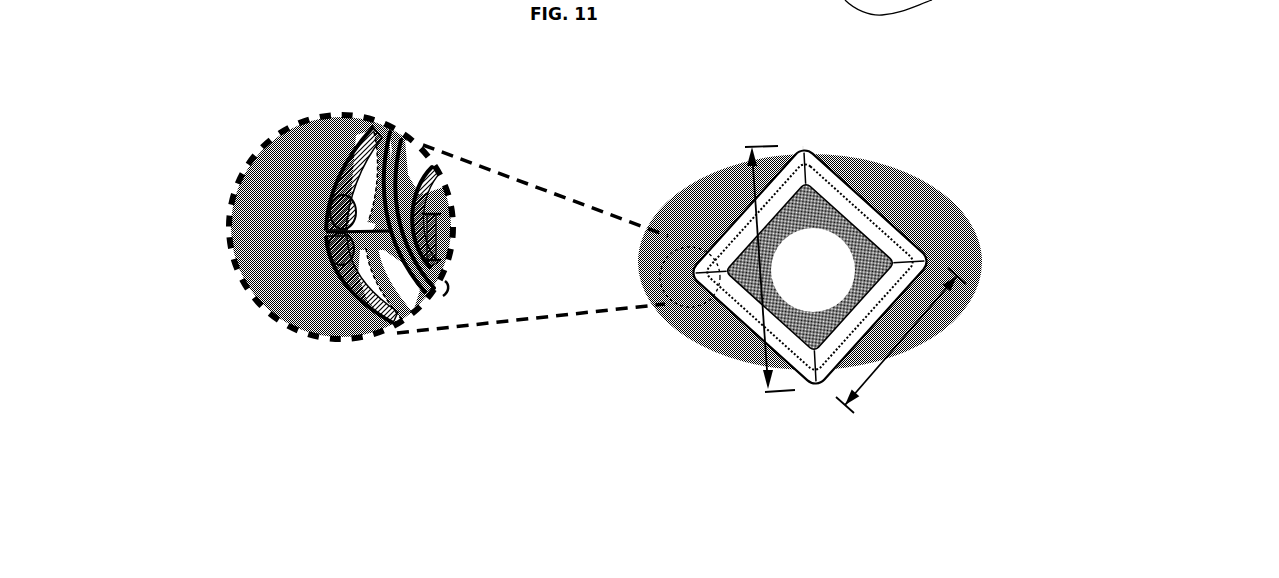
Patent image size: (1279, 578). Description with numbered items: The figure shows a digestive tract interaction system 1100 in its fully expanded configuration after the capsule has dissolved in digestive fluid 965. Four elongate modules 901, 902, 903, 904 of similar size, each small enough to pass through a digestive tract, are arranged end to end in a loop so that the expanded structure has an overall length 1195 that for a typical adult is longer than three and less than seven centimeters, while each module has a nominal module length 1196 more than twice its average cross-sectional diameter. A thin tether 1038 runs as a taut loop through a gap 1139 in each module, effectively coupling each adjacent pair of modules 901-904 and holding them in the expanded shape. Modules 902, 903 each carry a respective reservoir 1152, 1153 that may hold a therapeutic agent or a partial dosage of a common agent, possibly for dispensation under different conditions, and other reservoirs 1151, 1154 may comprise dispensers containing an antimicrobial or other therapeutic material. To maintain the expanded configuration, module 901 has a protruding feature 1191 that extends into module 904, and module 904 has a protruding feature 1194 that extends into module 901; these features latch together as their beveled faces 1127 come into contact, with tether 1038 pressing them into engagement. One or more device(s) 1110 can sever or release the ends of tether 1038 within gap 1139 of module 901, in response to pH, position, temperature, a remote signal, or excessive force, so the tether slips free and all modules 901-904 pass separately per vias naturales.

The module 901 is at (352, 190).
The module 902 is at (806, 147).
The module 903 is at (932, 262).
The module 904 is at (353, 277).
The digestive fluid 965 is at (813, 270).
The tether 1038 is at (433, 152).
The system 1100 is at (952, 242).
The device(s) 1110 is at (717, 250).
The beveled faces 1127 is at (330, 247).
The gap 1139 is at (448, 293).
The reservoir 1151 is at (388, 130).
The reservoir 1152 is at (880, 212).
The reservoir 1153 is at (887, 316).
The reservoir 1154 is at (393, 299).
The protruding feature 1191 is at (437, 210).
The protruding feature 1194 is at (453, 243).
The length 1195 is at (767, 367).
The nominal module length 1196 is at (876, 362).